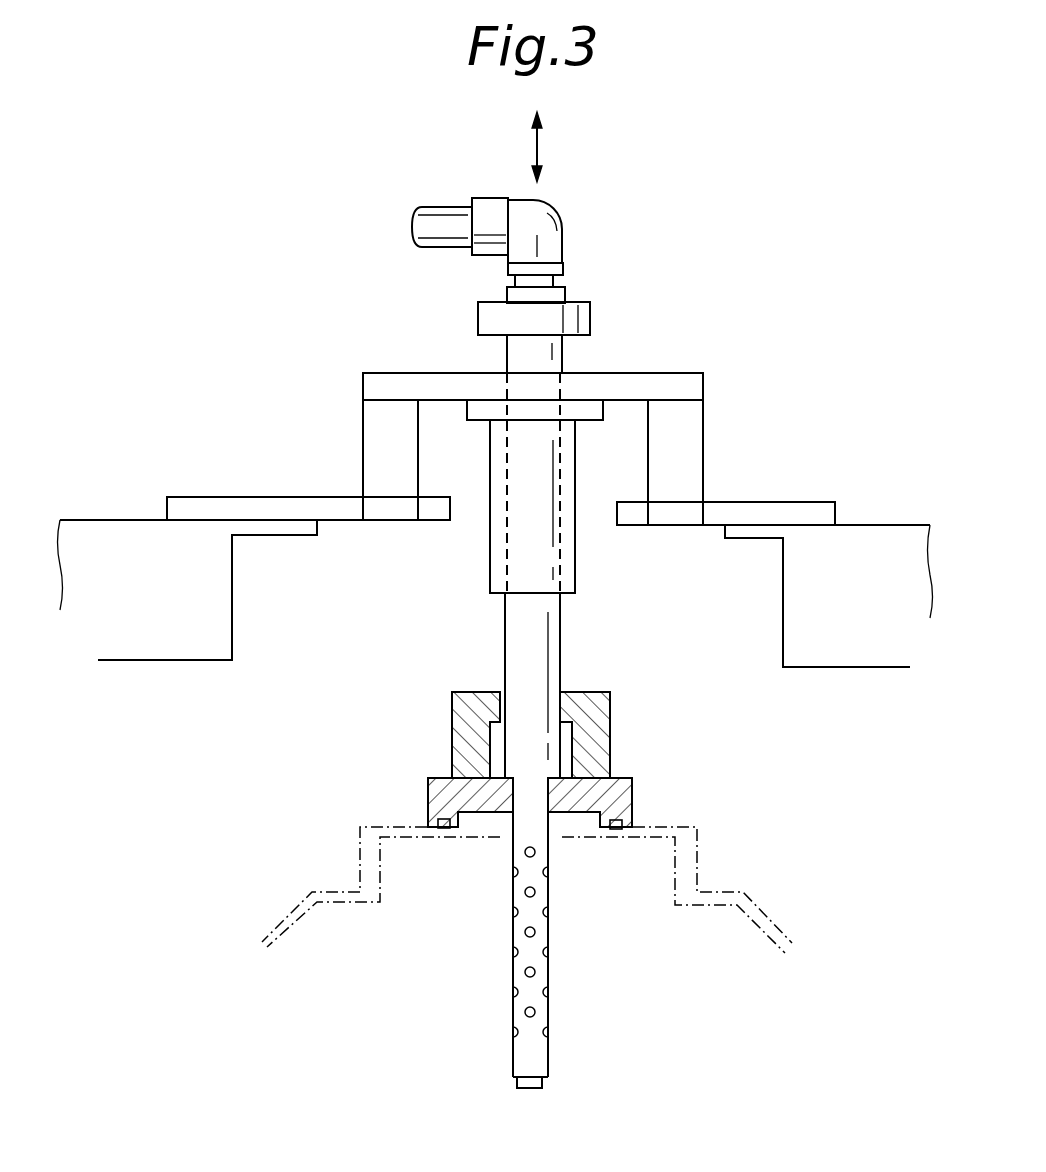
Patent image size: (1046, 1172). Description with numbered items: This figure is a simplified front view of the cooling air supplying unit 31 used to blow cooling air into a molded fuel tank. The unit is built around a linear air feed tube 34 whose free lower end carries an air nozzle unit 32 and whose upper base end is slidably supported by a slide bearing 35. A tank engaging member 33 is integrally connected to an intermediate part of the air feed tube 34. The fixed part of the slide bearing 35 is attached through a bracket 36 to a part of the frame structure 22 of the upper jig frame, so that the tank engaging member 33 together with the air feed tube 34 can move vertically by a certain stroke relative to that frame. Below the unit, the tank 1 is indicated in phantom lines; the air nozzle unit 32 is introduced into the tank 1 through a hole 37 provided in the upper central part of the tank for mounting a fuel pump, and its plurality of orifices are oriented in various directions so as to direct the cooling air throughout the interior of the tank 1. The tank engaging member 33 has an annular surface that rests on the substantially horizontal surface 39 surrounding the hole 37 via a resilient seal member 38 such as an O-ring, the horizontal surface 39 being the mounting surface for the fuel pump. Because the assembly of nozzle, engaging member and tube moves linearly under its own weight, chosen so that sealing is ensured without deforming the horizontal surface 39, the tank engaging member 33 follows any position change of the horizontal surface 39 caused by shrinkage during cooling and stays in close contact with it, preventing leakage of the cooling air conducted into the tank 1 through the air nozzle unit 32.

The tank 1 is at (757, 910).
The frame structure 22 is at (875, 533).
The cooling air supplying unit 31 is at (676, 366).
The air nozzle unit 32 is at (548, 1015).
The tank engaging member 33 is at (625, 802).
The air feed tube 34 is at (553, 672).
The slide bearing 35 is at (567, 550).
The bracket 36 is at (693, 473).
The hole 37 is at (495, 837).
The resilient seal member 38 is at (613, 830).
The horizontal surface 39 is at (388, 827).